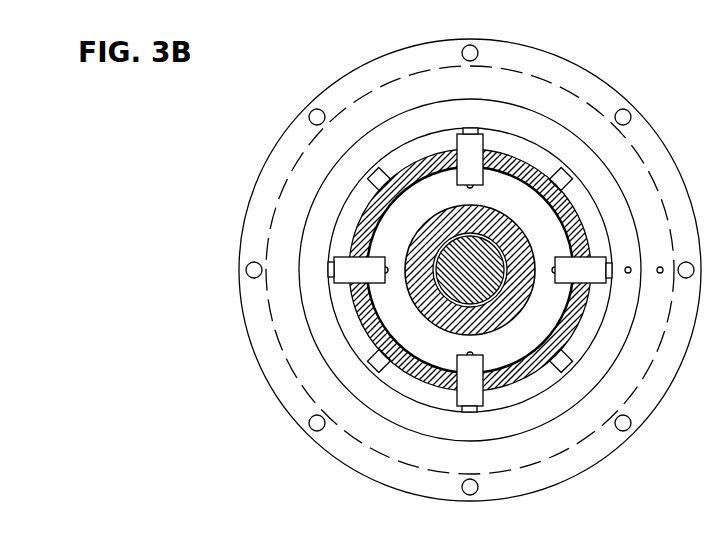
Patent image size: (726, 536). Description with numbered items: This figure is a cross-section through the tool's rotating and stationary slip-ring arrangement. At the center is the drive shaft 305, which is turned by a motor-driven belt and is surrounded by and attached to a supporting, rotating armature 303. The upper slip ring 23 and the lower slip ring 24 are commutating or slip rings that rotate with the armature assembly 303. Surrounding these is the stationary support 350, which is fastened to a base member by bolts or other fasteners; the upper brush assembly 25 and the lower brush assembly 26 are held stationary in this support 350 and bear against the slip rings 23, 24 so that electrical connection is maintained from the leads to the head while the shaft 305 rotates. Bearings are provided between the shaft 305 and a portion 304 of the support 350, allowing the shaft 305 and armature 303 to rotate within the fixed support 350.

The rotating armature 303 is at (603, 83).
The lower slip ring 24 is at (640, 386).
The upper slip ring 23 is at (627, 308).
The lower brush assembly 26 is at (378, 182).
The support 350 is at (438, 157).
The upper brush assembly 25 is at (476, 145).
The portion of the support 304 is at (437, 322).
The drive shaft 305 is at (491, 305).